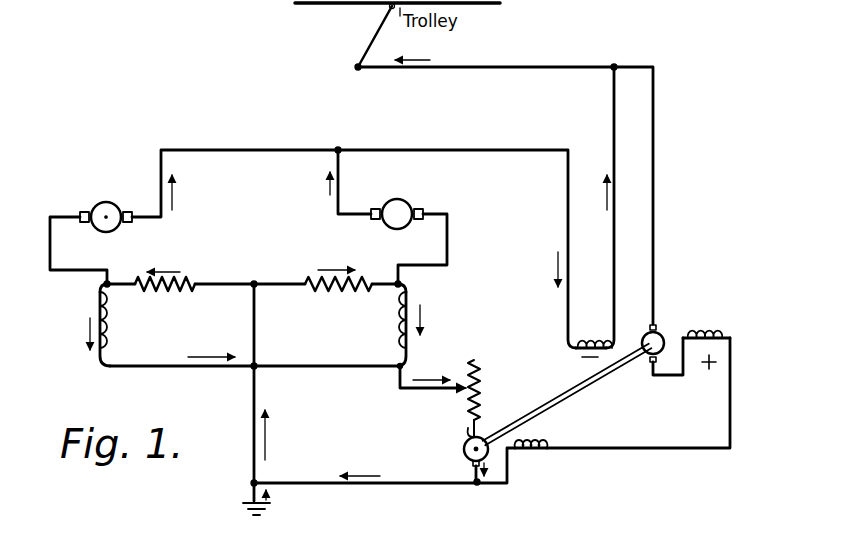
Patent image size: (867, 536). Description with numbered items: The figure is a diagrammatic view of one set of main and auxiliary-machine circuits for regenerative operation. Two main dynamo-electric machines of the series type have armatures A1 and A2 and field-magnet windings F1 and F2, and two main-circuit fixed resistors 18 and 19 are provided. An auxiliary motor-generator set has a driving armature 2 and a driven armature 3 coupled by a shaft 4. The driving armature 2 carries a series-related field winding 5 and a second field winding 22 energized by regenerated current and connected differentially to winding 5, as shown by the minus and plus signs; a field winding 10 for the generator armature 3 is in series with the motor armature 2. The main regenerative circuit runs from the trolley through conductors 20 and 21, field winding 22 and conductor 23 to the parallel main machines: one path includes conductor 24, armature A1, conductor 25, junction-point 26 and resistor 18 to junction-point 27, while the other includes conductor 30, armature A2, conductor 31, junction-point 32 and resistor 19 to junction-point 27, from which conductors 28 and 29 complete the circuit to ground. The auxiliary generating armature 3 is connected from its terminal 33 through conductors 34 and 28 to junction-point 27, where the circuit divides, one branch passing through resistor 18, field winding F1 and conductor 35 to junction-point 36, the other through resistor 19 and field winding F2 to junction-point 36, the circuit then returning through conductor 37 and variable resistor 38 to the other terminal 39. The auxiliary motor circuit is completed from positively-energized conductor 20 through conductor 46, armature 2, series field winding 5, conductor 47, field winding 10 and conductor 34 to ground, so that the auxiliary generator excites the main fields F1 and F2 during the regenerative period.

The driving armature 2 is at (659, 334).
The driven armature 3 is at (484, 440).
The shaft 4 is at (558, 380).
The series-related field winding 5 is at (716, 337).
The field winding 10 is at (538, 446).
The main-circuit fixed resistor 18 is at (192, 292).
The main-circuit fixed resistor 19 is at (346, 290).
The conductor 20 is at (503, 52).
The conductor 21 is at (611, 101).
The field winding 22 is at (590, 337).
The conductor 23 is at (497, 138).
The conductor 24 is at (277, 140).
The conductor 25 is at (51, 247).
The junction-point 26 is at (105, 284).
The junction-point 27 is at (254, 282).
The conductor 28 is at (253, 334).
The conductor 29 is at (254, 487).
The conductor 30 is at (338, 198).
The conductor 31 is at (446, 240).
The junction-point 32 is at (405, 287).
The terminal 33 is at (470, 466).
The conductor 34 is at (417, 476).
The conductor 35 is at (190, 371).
The junction-point 36 is at (405, 367).
The conductor 37 is at (440, 392).
The variable resistor 38 is at (480, 388).
The terminal 39 is at (455, 433).
The conductor 46 is at (652, 207).
The conductor 47 is at (693, 452).
The main armature A1 is at (108, 202).
The main armature A2 is at (395, 199).
The main field winding F1 is at (118, 335).
The main field winding F2 is at (391, 333).